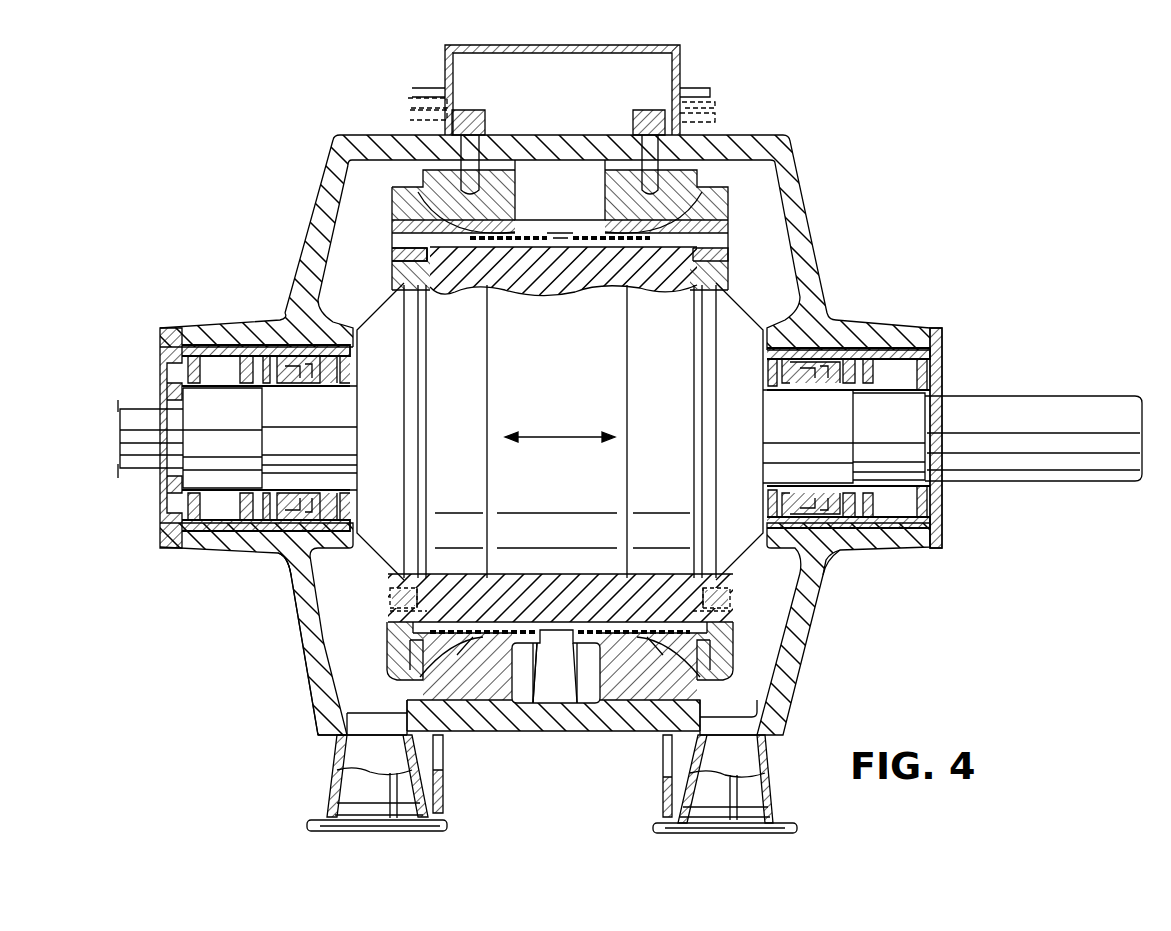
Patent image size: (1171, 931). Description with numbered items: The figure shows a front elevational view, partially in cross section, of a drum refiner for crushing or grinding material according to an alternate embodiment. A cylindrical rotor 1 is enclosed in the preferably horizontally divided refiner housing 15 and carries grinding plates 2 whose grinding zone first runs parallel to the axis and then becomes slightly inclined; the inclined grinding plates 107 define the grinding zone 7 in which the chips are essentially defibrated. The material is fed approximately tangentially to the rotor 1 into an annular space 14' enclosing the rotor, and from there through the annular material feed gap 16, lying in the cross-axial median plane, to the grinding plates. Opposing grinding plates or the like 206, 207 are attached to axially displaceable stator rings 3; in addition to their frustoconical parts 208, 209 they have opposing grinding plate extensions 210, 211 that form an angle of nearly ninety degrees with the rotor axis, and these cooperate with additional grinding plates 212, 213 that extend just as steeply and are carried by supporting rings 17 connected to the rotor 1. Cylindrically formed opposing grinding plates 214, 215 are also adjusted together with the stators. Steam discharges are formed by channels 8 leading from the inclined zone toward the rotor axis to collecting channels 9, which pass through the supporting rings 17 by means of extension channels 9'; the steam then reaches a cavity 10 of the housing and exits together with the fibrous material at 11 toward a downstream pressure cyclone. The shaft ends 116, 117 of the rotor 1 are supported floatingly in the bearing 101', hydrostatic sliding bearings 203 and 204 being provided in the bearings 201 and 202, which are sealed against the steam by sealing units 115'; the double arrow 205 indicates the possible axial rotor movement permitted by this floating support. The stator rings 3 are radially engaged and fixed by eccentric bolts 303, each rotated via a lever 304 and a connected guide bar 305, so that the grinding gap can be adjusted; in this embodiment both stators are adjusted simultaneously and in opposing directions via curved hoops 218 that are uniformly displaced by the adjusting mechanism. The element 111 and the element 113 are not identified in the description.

The rotor 1 is at (368, 535).
The grinding plates 2 is at (525, 287).
The stator rings 3 is at (517, 192).
The grinding zone 7 is at (396, 221).
The channels 8 is at (445, 250).
The collecting channels 9 is at (560, 436).
The extension channels 9' is at (557, 258).
The cavity 10 is at (780, 262).
The outlet 11 is at (308, 823).
The annular space 14' is at (556, 697).
The refiner housing 15 is at (812, 206).
The annular material feed gap 16 is at (556, 230).
The supporting rings 17 is at (397, 190).
The bearing 101' is at (540, 402).
The grinding plates 107 is at (396, 236).
The lamination stack 111 is at (572, 242).
The lower housing wall 113 is at (300, 632).
The sealing units 115' is at (546, 564).
The shaft end 116 is at (1017, 412).
The shaft end 117 is at (142, 413).
The bearing 201 is at (280, 332).
The bearing 202 is at (816, 330).
The hydrostatic sliding bearing 203 is at (210, 330).
The hydrostatic sliding bearing 204 is at (893, 370).
The double arrow 205 is at (560, 437).
The opposing grinding plate 206 is at (490, 210).
The opposing grinding plate 207 is at (729, 208).
The frustoconical part 208 is at (468, 725).
The frustoconical part 209 is at (638, 718).
The opposing grinding plate extension 210 is at (415, 685).
The opposing grinding plate extension 211 is at (697, 688).
The grinding plate 212 is at (412, 658).
The grinding plate 213 is at (712, 668).
The cylindrical opposing grinding plate 214 is at (530, 705).
The cylindrical opposing grinding plate 215 is at (577, 705).
The curved hoops 218 is at (683, 53).
The eccentric bolt 303 is at (645, 145).
The lever 304 is at (718, 106).
The guide bar 305 is at (712, 95).